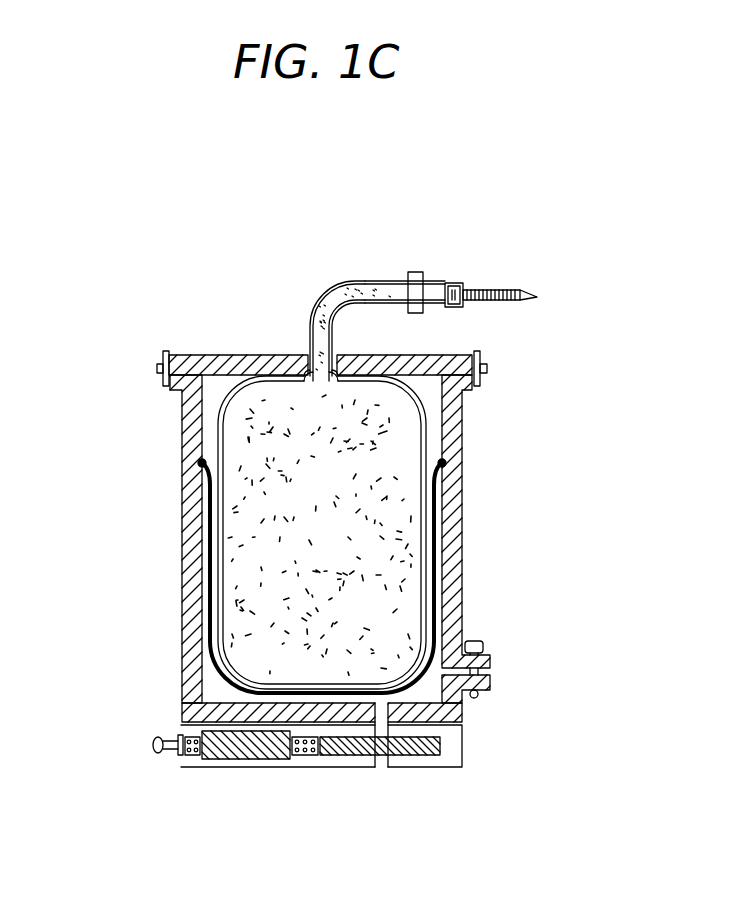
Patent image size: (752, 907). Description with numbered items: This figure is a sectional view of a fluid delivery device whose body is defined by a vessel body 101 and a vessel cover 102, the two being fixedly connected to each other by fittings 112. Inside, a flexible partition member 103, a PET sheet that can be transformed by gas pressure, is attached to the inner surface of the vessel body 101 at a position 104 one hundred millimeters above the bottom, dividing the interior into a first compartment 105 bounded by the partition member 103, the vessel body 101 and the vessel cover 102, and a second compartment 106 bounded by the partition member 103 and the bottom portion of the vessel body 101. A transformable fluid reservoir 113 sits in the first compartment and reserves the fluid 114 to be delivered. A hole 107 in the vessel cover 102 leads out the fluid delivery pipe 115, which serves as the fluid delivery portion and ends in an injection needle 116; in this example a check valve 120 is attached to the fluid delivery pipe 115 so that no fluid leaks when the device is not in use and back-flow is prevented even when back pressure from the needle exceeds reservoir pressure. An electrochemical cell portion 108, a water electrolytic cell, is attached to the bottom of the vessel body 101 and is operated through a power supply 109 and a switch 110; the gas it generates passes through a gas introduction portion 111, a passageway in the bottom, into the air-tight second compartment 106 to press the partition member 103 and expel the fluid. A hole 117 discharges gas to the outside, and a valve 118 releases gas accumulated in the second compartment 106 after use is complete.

The vessel body 101 is at (182, 652).
The vessel cover 102 is at (233, 355).
The partition member 103 is at (210, 568).
The position 104 is at (200, 464).
The first compartment 105 is at (222, 432).
The second compartment 106 is at (212, 692).
The hole 107 is at (311, 345).
The electrochemical cell portion 108 is at (420, 757).
The power supply 109 is at (262, 757).
The switch 110 is at (165, 746).
The gas introduction portion 111 is at (382, 716).
The fittings 112 is at (160, 360).
The transformable fluid reservoir 113 is at (428, 540).
The fluid 114 is at (405, 432).
The fluid delivery pipe 115 is at (383, 294).
The injection needle 116 is at (493, 291).
The hole for discharging gas 117 is at (378, 757).
The valve 118 is at (485, 642).
The check valve 120 is at (417, 272).